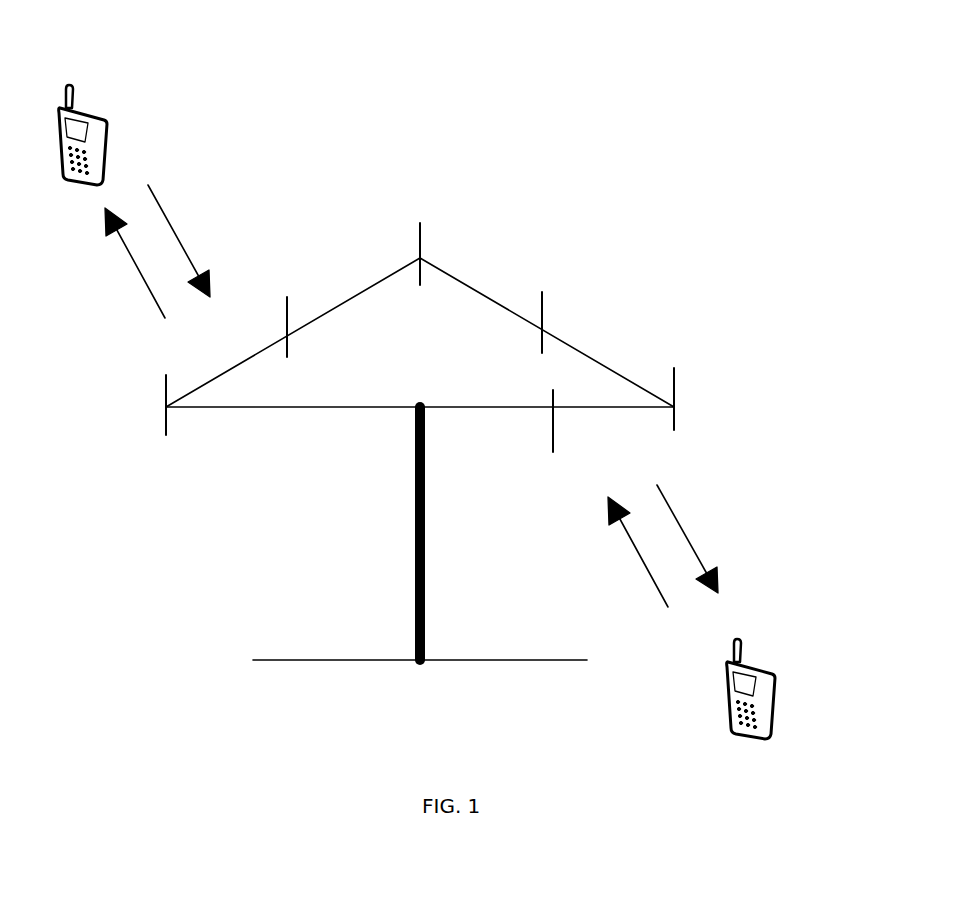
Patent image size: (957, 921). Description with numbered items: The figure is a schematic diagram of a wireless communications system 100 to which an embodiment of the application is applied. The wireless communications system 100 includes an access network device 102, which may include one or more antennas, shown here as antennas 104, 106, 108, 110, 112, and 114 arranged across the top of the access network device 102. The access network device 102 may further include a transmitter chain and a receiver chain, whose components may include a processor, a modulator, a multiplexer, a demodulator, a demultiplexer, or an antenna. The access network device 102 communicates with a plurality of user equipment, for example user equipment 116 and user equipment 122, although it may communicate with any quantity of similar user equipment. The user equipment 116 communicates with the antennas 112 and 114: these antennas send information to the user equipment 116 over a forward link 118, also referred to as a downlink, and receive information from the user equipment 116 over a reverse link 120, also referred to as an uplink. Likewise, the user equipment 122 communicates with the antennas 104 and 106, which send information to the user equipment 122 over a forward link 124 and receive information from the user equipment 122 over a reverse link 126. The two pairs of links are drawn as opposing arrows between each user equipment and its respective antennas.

The wireless communications system 100 is at (608, 108).
The access network device 102 is at (424, 585).
The antenna 104 is at (167, 417).
The antenna 106 is at (288, 345).
The antenna 108 is at (421, 242).
The antenna 110 is at (543, 307).
The antenna 112 is at (675, 383).
The antenna 114 is at (554, 438).
The user equipment 116 is at (775, 680).
The forward link 118 is at (675, 515).
The reverse link 120 is at (653, 583).
The user equipment 122 is at (103, 112).
The forward link 124 is at (140, 277).
The reverse link 126 is at (167, 213).